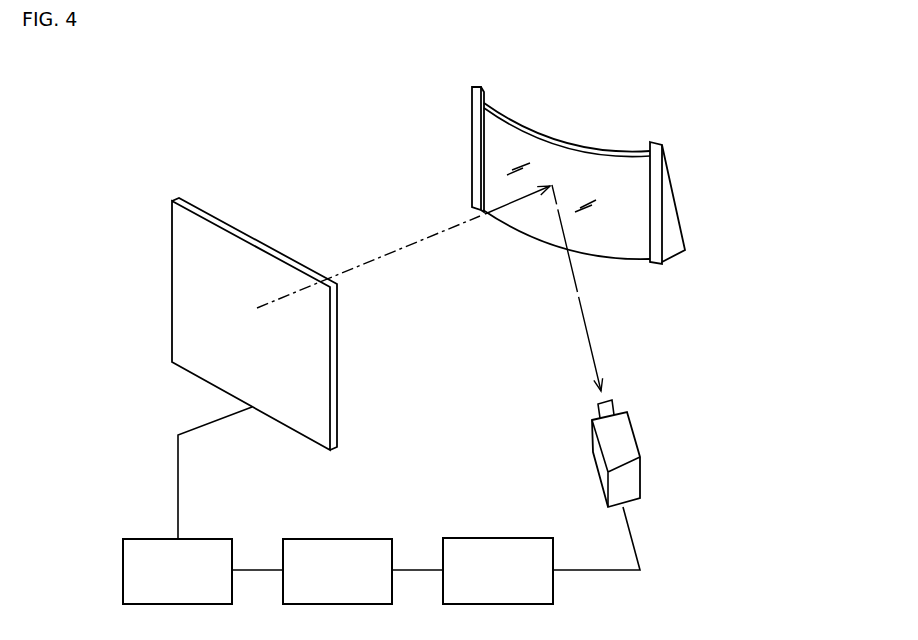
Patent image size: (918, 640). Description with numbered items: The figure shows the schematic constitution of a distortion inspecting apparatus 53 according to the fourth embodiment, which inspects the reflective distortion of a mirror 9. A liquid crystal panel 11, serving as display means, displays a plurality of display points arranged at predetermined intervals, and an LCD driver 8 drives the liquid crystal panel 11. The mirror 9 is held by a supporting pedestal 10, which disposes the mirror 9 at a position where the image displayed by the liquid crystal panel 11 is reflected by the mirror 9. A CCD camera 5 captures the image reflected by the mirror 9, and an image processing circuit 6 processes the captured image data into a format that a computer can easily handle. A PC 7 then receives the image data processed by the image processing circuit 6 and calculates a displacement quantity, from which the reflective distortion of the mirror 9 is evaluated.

The distortion inspecting apparatus 53 is at (290, 121).
The liquid crystal panel 11 is at (172, 268).
The mirror 9 is at (557, 142).
The supporting pedestal 10 is at (692, 268).
The CCD camera 5 is at (637, 432).
The image processing circuit 6 is at (537, 538).
The PC 7 is at (377, 539).
The LCD driver 8 is at (215, 539).